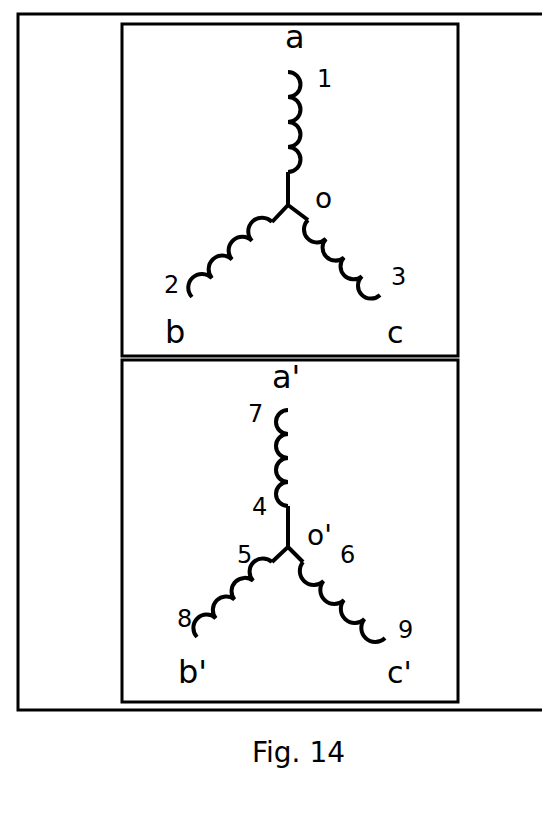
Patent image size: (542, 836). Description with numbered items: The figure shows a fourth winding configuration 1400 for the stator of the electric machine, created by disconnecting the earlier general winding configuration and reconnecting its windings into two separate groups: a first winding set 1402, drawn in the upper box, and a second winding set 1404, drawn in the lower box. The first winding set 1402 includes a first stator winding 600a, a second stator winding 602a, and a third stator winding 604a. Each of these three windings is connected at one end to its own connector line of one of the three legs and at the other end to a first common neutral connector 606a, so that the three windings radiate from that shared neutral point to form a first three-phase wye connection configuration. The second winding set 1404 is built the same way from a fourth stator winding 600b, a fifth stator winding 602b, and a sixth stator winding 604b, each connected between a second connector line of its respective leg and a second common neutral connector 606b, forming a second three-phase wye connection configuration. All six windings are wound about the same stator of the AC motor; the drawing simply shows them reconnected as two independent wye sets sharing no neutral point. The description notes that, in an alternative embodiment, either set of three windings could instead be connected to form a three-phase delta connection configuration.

The fourth winding configuration 1400 is at (522, 59).
The first winding set 1402 is at (183, 65).
The second winding set 1404 is at (188, 397).
The first stator winding 600a is at (307, 134).
The second stator winding 602a is at (208, 268).
The third stator winding 604a is at (322, 260).
The first common neutral connector 606a is at (286, 204).
The fourth stator winding 600b is at (272, 452).
The fifth stator winding 602b is at (255, 605).
The sixth stator winding 604b is at (365, 598).
The second common neutral connector 606b is at (286, 546).